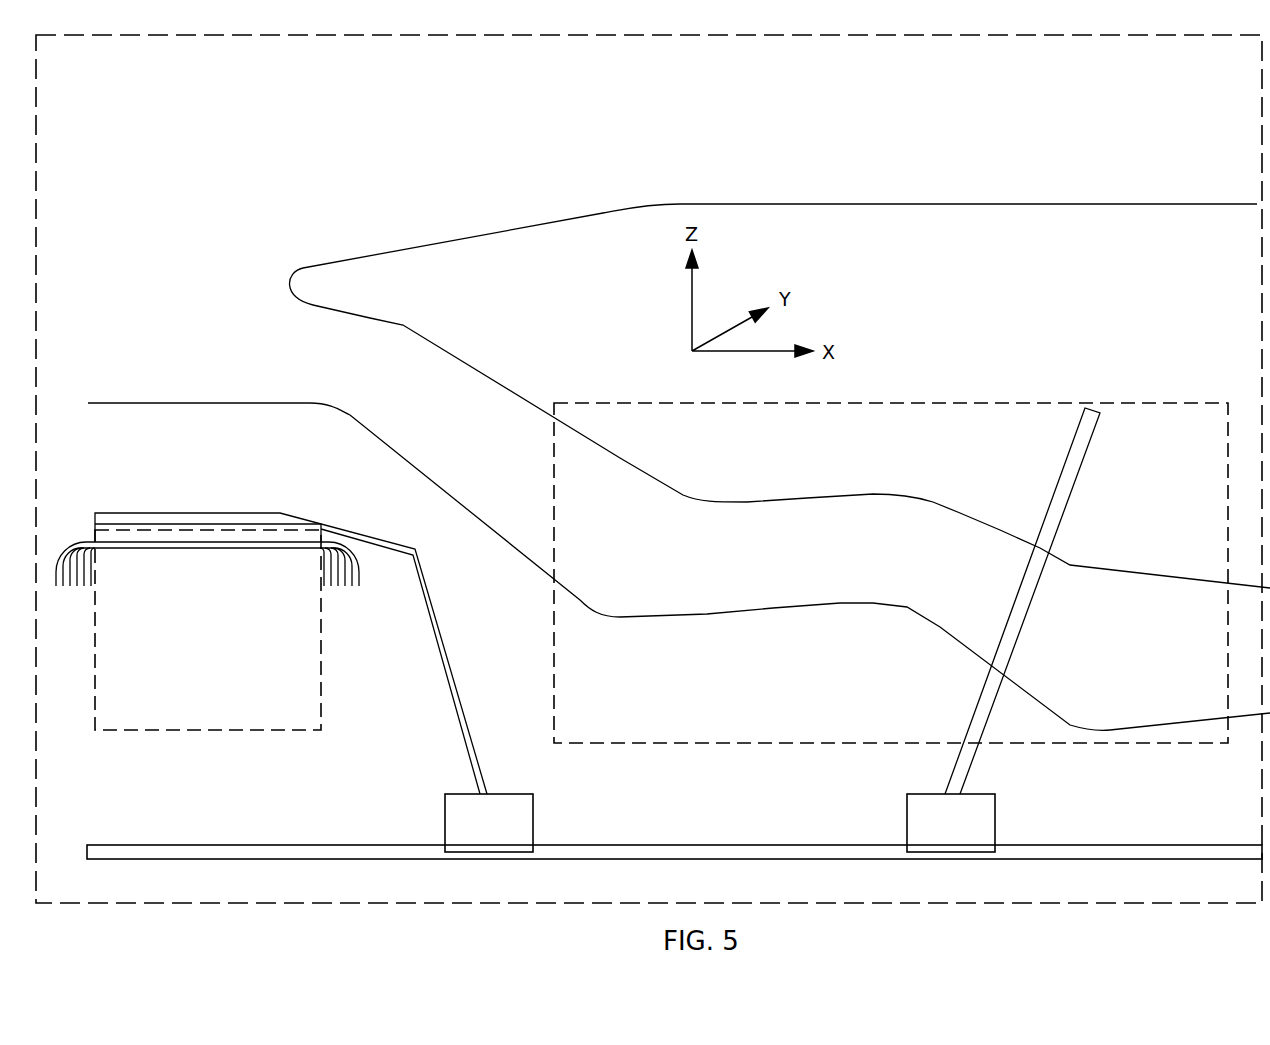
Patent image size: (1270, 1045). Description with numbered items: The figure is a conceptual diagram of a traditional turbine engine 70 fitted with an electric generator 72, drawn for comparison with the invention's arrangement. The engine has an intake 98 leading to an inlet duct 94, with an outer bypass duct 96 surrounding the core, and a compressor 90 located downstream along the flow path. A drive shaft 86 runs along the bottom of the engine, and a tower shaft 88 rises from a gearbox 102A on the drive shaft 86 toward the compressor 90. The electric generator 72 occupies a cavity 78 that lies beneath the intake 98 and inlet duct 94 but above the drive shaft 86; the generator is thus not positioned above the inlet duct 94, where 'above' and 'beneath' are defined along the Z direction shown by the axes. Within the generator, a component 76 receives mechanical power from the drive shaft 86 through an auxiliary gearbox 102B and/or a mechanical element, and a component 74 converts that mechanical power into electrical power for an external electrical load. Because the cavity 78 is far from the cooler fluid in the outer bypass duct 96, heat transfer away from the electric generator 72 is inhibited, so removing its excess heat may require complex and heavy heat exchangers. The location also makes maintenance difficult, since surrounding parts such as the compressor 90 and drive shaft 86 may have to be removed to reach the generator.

The traditional turbine engine 70 is at (649, 469).
The electric generator 72 is at (208, 630).
The component 74 is at (322, 630).
The component 76 is at (202, 512).
The cavity 78 is at (134, 779).
The drive shaft 86 is at (625, 862).
The tower shaft 88 is at (1055, 492).
The compressor 90 is at (891, 573).
The inlet duct 94 is at (306, 351).
The outer bypass duct 96 is at (634, 118).
The intake 98 is at (116, 236).
The gearbox 102A is at (951, 823).
The auxiliary gearbox 102B is at (489, 823).